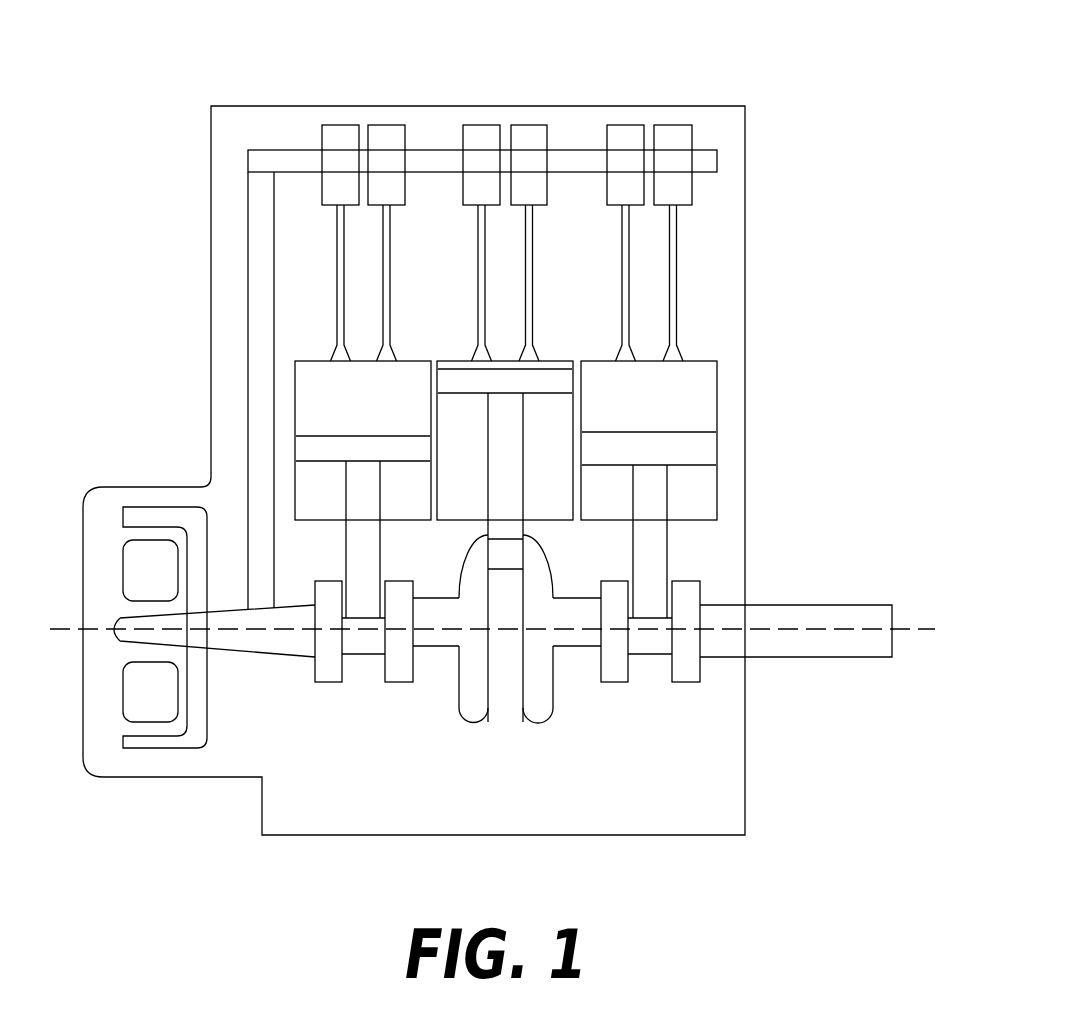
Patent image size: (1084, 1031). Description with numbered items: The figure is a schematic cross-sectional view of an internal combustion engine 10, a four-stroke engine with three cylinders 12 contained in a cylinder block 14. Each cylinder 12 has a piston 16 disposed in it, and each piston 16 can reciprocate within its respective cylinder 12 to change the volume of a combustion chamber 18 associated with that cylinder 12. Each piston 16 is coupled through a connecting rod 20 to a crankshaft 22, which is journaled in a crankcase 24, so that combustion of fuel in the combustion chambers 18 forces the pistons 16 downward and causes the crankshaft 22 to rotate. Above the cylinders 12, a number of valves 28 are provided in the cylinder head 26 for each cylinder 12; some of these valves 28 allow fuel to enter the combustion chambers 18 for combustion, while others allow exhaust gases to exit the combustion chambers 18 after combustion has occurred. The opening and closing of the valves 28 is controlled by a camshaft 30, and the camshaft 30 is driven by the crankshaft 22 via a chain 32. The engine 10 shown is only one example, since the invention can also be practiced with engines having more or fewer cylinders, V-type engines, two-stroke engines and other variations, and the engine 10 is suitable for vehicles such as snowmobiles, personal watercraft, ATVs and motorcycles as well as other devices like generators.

The internal combustion engine 10 is at (866, 84).
The cylinder 12 is at (295, 375).
The cylinder block 14 is at (747, 485).
The piston 16 is at (360, 441).
The combustion chamber 18 is at (306, 395).
The connecting rod 20 is at (358, 545).
The crankshaft 22 is at (538, 693).
The crankcase 24 is at (747, 573).
The cylinder head 26 is at (783, 228).
The valve 28 is at (336, 276).
The camshaft 30 is at (580, 158).
The chain 32 is at (260, 265).